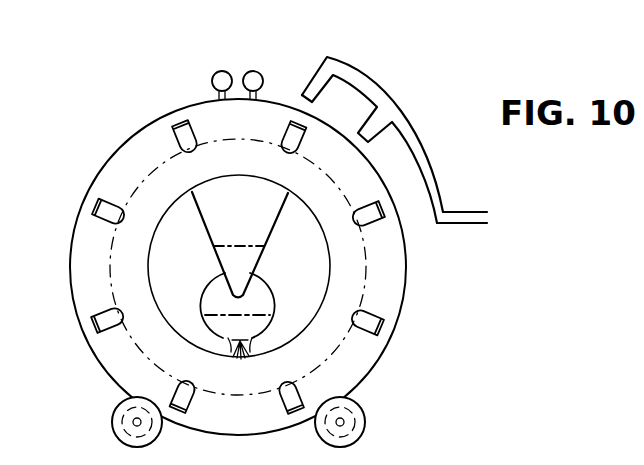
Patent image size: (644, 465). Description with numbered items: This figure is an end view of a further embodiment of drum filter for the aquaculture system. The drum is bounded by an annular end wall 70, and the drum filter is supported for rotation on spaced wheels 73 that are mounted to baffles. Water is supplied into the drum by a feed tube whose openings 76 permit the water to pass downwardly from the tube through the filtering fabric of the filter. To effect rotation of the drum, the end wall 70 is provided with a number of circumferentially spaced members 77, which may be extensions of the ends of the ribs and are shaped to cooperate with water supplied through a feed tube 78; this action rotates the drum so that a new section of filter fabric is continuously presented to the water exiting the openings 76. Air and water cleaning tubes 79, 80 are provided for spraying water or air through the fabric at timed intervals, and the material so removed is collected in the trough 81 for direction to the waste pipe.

The annular end wall 70 is at (403, 297).
The wheels 73 is at (118, 407).
The openings 76 is at (246, 358).
The circumferentially spaced members 77 is at (102, 217).
The feed tube 78 is at (438, 125).
The air and water cleaning tube 79 is at (262, 74).
The air and water cleaning tube 80 is at (216, 72).
The trough 81 is at (186, 196).